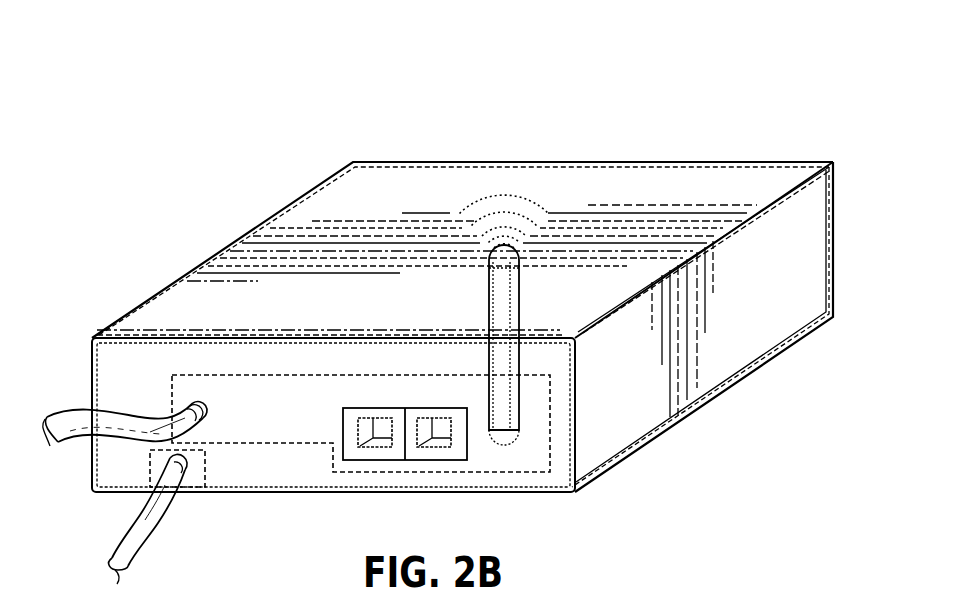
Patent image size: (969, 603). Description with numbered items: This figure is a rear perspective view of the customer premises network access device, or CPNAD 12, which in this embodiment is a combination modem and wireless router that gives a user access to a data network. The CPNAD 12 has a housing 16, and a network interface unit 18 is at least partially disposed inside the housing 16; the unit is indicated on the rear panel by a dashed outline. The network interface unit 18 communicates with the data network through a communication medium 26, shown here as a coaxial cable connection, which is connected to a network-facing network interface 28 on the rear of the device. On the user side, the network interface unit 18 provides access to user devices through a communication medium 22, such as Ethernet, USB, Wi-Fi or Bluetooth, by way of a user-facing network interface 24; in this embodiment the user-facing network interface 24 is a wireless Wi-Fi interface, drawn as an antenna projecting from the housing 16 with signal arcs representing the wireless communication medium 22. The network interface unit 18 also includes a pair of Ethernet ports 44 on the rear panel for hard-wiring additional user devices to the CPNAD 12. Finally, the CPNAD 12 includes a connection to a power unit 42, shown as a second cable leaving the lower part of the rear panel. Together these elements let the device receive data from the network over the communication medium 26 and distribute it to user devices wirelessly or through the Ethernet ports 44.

The customer premises network access device (CPNAD) 12 is at (438, 309).
The housing 16 is at (242, 237).
The network interface unit 18 is at (395, 472).
The communication medium 22 is at (487, 186).
The user-facing network interface 24 is at (519, 435).
The communication medium 26 is at (66, 418).
The network-facing network interface 28 is at (196, 400).
The power unit 42 is at (150, 545).
The Ethernet ports 44 is at (360, 446).